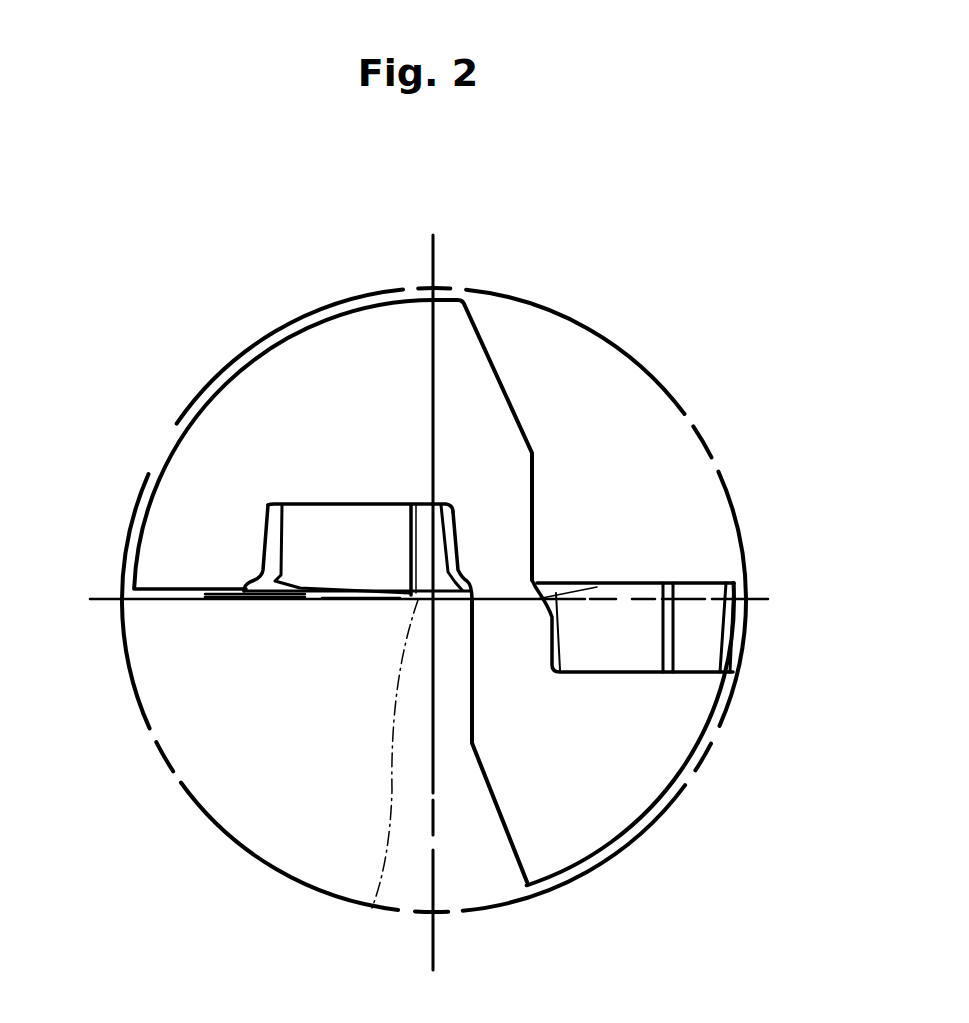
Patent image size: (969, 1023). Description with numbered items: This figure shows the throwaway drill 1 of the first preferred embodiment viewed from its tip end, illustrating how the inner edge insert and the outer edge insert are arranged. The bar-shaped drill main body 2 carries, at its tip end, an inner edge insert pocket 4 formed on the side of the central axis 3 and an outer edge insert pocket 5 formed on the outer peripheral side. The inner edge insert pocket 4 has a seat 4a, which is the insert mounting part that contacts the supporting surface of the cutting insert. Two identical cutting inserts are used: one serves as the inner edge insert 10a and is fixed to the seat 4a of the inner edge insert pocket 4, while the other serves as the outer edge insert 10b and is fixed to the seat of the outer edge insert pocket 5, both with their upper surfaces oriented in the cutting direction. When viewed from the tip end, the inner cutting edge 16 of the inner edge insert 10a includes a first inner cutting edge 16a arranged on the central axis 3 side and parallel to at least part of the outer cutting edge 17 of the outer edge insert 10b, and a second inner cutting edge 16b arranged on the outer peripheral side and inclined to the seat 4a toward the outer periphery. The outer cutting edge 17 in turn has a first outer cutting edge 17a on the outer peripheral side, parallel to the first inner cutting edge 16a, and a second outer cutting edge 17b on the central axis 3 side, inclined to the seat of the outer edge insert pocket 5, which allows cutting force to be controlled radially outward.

The throwaway drill 1 is at (516, 337).
The drill main body 2 is at (483, 432).
The central axis 3 is at (362, 911).
The inner edge insert pocket 4 is at (267, 516).
The seat 4a is at (360, 512).
The outer edge insert pocket 5 is at (694, 656).
The inner edge insert 10a is at (300, 547).
The outer edge insert 10b is at (697, 640).
The inner cutting edge 16 is at (282, 656).
The first inner cutting edge 16a is at (381, 600).
The second inner cutting edge 16b is at (302, 600).
The outer cutting edge 17 is at (726, 529).
The first outer cutting edge 17a is at (683, 582).
The second outer cutting edge 17b is at (580, 582).